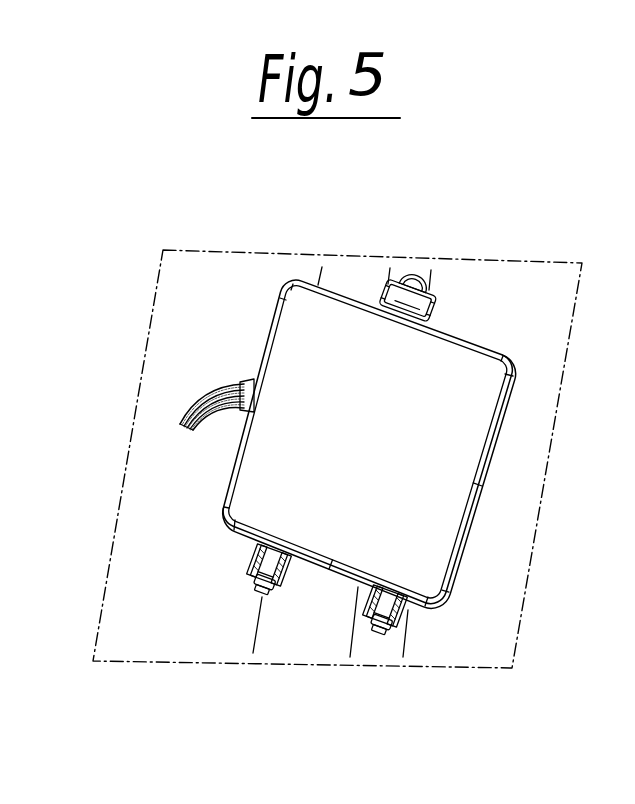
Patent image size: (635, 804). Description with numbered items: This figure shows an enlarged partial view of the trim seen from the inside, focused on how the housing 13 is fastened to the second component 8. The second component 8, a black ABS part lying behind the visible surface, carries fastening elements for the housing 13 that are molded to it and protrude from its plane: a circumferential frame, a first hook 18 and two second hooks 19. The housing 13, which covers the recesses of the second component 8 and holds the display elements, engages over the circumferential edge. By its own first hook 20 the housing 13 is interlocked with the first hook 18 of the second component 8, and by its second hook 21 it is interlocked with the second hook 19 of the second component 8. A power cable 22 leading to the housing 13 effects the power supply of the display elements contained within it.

The second component 8 is at (158, 498).
The housing 13 is at (297, 343).
The first hook 18 is at (413, 305).
The second hook 19 is at (263, 593).
The first hook 20 is at (410, 278).
The second hook 21 is at (248, 558).
The power cable 22 is at (197, 393).